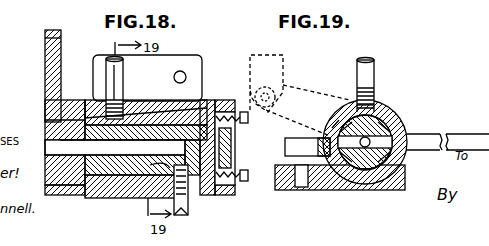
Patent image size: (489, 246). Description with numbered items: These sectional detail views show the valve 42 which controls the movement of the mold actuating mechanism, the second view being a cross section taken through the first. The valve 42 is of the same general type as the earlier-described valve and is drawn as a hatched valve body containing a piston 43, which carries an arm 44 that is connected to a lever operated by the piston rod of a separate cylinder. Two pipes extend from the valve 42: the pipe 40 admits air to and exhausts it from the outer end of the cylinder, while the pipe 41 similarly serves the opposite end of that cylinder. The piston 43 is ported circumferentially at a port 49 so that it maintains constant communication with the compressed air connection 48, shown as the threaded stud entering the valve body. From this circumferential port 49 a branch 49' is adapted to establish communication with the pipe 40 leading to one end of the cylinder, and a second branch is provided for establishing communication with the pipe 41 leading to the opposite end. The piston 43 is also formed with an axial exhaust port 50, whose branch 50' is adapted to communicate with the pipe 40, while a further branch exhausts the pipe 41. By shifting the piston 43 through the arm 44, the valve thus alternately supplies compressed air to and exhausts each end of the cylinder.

In FIG. 18, the pipe 40 is at (106, 85).
In FIG. 19, the pipe 40 is at (302, 147).
In FIG. 18, the pipe 41 is at (190, 202).
In FIG. 19, the pipe 41 is at (443, 134).
In FIG. 18, the valve 42 is at (198, 105).
In FIG. 19, the valve 42 is at (386, 118).
In FIG. 18, the piston 43 is at (92, 191).
In FIG. 19, the piston 43 is at (349, 172).
In FIG. 18, the arm 44 is at (45, 72).
In FIG. 19, the arm 44 is at (290, 82).
In FIG. 18, the compressed air connection 48 is at (110, 195).
In FIG. 19, the compressed air connection 48 is at (374, 66).
In FIG. 18, the circumferential port 49 is at (126, 106).
In FIG. 19, the circumferential port 49 is at (391, 142).
In FIG. 19, the branch 49' is at (326, 101).
In FIG. 18, the axial exhaust port 50 is at (98, 152).
In FIG. 18, the branch 50' is at (51, 108).